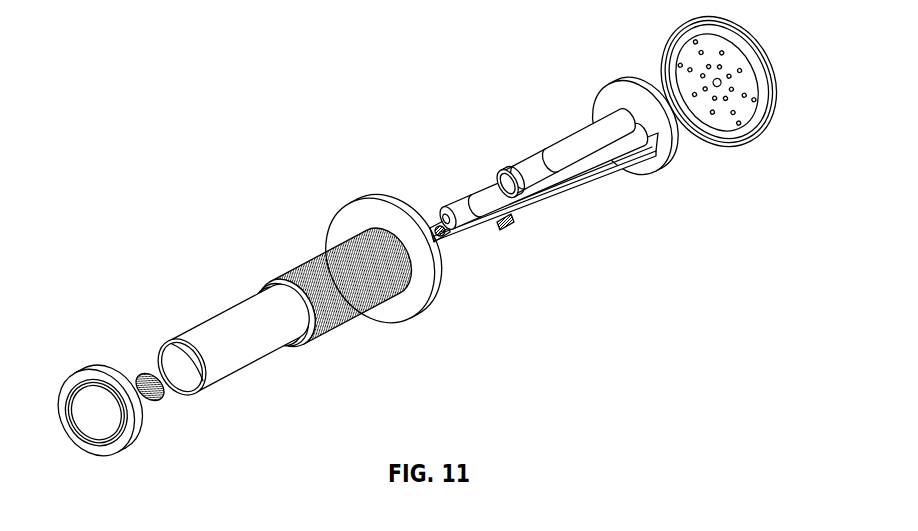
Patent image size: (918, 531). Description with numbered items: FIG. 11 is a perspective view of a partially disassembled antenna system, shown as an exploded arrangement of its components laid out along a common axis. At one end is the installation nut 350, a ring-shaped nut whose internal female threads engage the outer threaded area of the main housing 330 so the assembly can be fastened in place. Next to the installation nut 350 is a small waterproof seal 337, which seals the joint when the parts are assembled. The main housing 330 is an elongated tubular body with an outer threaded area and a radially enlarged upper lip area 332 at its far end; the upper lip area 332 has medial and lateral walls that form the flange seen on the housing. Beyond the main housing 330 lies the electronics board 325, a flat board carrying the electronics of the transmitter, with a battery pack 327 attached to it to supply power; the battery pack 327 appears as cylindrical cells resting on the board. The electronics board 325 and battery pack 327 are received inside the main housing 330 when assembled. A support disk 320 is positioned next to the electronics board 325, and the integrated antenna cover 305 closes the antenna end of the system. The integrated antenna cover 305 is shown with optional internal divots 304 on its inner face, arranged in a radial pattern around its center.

The internal divots 304 is at (693, 52).
The integrated antenna cover 305 is at (724, 28).
The support disk 320 is at (617, 84).
The electronics board 325 is at (602, 168).
The battery pack 327 is at (538, 157).
The main housing 330 is at (212, 304).
The upper lip area 332 is at (346, 190).
The waterproof seal 337 is at (168, 396).
The installation nut 350 is at (98, 372).